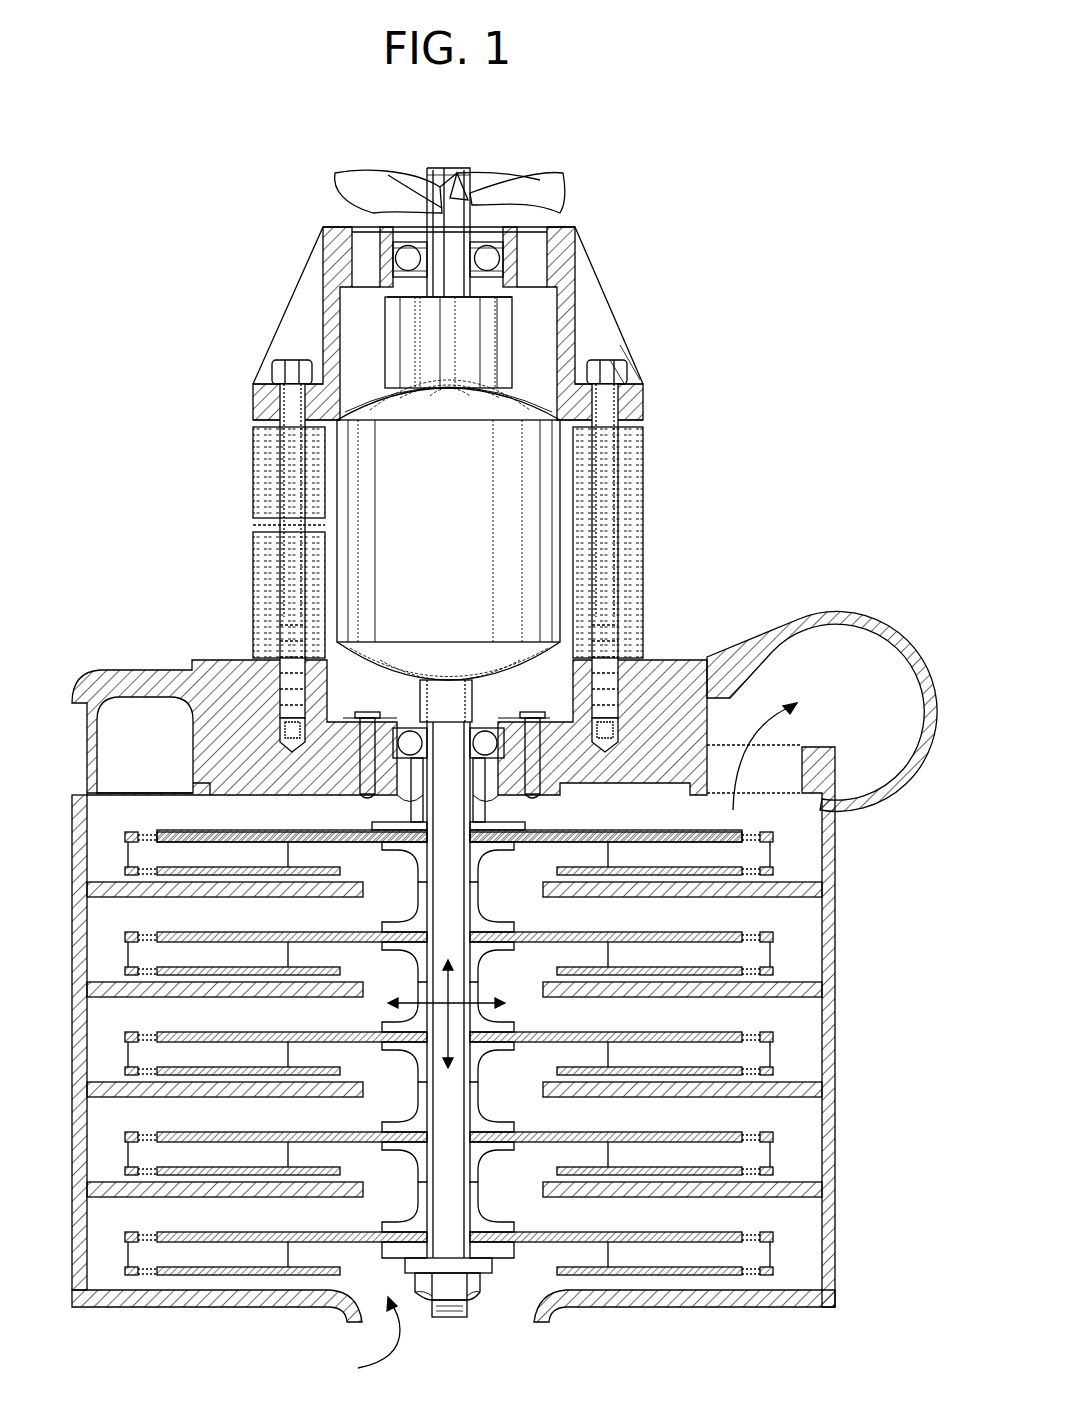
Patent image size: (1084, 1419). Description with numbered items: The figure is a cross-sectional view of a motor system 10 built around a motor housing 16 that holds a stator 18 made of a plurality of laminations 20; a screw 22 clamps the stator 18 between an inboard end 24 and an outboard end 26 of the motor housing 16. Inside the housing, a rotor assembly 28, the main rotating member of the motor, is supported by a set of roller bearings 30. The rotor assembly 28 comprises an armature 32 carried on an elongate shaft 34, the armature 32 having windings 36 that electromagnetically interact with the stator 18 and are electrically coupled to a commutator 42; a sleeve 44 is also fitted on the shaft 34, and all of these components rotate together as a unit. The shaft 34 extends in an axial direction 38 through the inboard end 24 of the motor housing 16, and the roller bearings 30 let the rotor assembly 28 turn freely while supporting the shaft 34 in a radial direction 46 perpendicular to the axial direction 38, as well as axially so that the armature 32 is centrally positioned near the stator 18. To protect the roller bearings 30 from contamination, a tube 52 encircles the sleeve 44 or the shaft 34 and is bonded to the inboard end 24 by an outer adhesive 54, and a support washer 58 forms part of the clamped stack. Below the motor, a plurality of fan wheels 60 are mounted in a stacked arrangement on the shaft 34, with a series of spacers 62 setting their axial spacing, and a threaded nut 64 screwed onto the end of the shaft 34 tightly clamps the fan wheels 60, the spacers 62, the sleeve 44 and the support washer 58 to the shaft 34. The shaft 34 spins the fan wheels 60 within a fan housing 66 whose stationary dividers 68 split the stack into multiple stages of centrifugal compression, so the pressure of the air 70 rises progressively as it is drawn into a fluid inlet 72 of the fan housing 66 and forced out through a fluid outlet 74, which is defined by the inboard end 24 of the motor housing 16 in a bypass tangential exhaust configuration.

The motor system 10 is at (761, 226).
The motor housing 16 is at (282, 316).
The stator 18 is at (253, 453).
The laminations 20 is at (648, 515).
The screw 22 is at (604, 360).
The inboard end 24 is at (678, 659).
The outboard end 26 is at (645, 407).
The rotor assembly 28 is at (452, 168).
The roller bearings 30 is at (490, 260).
The armature 32 is at (335, 525).
The shaft 34 is at (418, 697).
The windings 36 is at (383, 398).
The axial direction 38 is at (455, 1065).
The commutator 42 is at (510, 360).
The sleeve 44 is at (488, 810).
The radial direction 46 is at (488, 1003).
The tube 52 is at (410, 827).
The outer adhesive 54 is at (368, 798).
The support washer 58 is at (527, 826).
The fan wheels 60 is at (773, 955).
The spacers 62 is at (480, 900).
The threaded nut 64 is at (482, 1292).
The fan housing 66 is at (837, 1025).
The stationary dividers 68 is at (782, 898).
The air 70 is at (758, 697).
The fluid inlet 72 is at (545, 1310).
The fluid outlet 74 is at (862, 700).